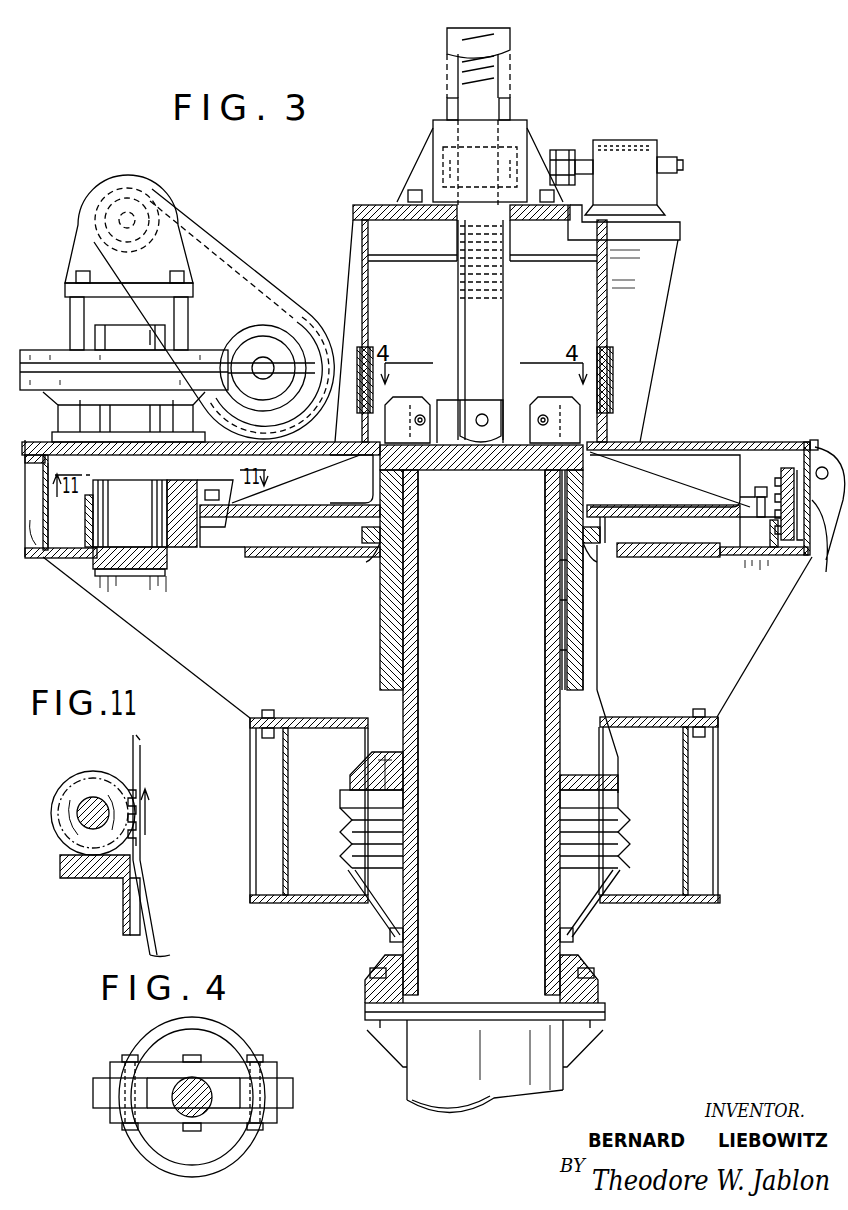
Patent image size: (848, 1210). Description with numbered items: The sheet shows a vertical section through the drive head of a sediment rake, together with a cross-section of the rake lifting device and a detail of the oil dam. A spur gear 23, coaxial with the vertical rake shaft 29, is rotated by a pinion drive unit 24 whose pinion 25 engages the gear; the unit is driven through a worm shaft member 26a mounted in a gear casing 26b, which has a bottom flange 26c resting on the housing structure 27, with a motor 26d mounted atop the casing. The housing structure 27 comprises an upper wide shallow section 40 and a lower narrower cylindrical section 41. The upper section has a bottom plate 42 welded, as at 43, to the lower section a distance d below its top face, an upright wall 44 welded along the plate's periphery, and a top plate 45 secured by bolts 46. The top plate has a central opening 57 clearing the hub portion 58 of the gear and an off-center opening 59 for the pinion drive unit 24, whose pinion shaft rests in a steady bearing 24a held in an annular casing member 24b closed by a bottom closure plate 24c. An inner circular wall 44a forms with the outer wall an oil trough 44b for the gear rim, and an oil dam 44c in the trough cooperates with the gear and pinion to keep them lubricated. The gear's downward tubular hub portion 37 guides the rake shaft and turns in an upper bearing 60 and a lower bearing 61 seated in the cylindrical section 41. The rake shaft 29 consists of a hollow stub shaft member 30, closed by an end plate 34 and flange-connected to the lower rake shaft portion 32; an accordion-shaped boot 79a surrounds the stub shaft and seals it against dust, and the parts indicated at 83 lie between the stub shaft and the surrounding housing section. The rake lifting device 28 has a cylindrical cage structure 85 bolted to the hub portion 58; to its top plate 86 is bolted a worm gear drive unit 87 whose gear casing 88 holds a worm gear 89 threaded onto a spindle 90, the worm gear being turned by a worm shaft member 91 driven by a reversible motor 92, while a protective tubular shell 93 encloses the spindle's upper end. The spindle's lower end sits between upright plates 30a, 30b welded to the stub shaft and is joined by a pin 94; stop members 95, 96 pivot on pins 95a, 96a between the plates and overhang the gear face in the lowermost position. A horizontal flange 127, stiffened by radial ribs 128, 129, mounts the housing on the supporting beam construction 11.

In FIG. 3, the supporting beam construction 11 is at (285, 862).
In FIG. 3, the spur gear 23 is at (786, 480).
In FIG. 11, the spur gear 23 is at (142, 762).
In FIG. 3, the pinion drive unit 24 is at (226, 230).
In FIG. 3, the steady bearing 24a is at (172, 566).
In FIG. 3, the annular casing member 24b is at (88, 578).
In FIG. 3, the bottom closure plate 24c is at (120, 584).
In FIG. 3, the pinion 25 is at (142, 507).
In FIG. 11, the pinion 25 is at (100, 792).
In FIG. 3, the worm shaft member 26a is at (262, 362).
In FIG. 3, the gear casing 26b is at (48, 350).
In FIG. 3, the bottom flange 26c is at (58, 442).
In FIG. 3, the motor 26d is at (80, 220).
In FIG. 3, the housing structure 27 is at (659, 428).
In FIG. 3, the rake lifting device 28 is at (395, 164).
In FIG. 3, the vertical rake shaft 29 is at (626, 955).
In FIG. 3, the hollow stub shaft member 30 is at (418, 897).
In FIG. 4, the hollow stub shaft member 30 is at (222, 1022).
In FIG. 3, the upright plate 30a is at (452, 405).
In FIG. 4, the upright plate 30a is at (225, 1066).
In FIG. 4, the upright plate 30b is at (228, 1118).
In FIG. 3, the lower rake shaft portion 32 is at (425, 1073).
In FIG. 3, the end plate 34 is at (455, 468).
In FIG. 3, the tubular hub portion 37 is at (390, 602).
In FIG. 3, the upper wide shallow section 40 is at (826, 560).
In FIG. 3, the lower cylindrical section 41 is at (598, 628).
In FIG. 3, the bottom plate 42 is at (700, 552).
In FIG. 3, the weld 43 is at (612, 548).
In FIG. 3, the upright wall 44 is at (47, 548).
In FIG. 3, the lower inner circular wall 44a is at (228, 558).
In FIG. 3, the oil trough 44b is at (774, 555).
In FIG. 3, the oil dam 44c is at (83, 540).
In FIG. 11, the oil dam 44c is at (80, 868).
In FIG. 3, the top plate 45 is at (712, 442).
In FIG. 3, the bolts 46 is at (815, 444).
In FIG. 3, the central opening 57 is at (345, 460).
In FIG. 3, the hub portion 58 is at (607, 462).
In FIG. 3, the off-center opening 59 is at (236, 470).
In FIG. 3, the upper bearing 60 is at (345, 565).
In FIG. 3, the lower bearing 61 is at (352, 762).
In FIG. 3, the accordion-shaped boot 79a is at (622, 820).
In FIG. 3, the gap / spacer strips 83 is at (548, 640).
In FIG. 3, the cylindrical cage structure 85 is at (607, 302).
In FIG. 3, the top plate of the cage structure 86 is at (372, 212).
In FIG. 3, the worm gear drive unit 87 is at (636, 102).
In FIG. 3, the gear casing 88 is at (433, 143).
In FIG. 3, the worm gear 89 is at (512, 152).
In FIG. 3, the threaded spindle 90 is at (492, 88).
In FIG. 4, the threaded spindle 90 is at (186, 1082).
In FIG. 3, the worm shaft member 91 is at (520, 158).
In FIG. 3, the reversible motor 92 is at (634, 216).
In FIG. 3, the protective vertical tubular shell 93 is at (447, 102).
In FIG. 4, the pin 94 is at (190, 1132).
In FIG. 3, the stop member 95 is at (422, 412).
In FIG. 4, the stop member 95 is at (102, 1092).
In FIG. 3, the pin 95a is at (418, 416).
In FIG. 3, the stop member 96 is at (540, 414).
In FIG. 4, the stop member 96 is at (285, 1100).
In FIG. 3, the pin 96a is at (566, 402).
In FIG. 3, the horizontal flange 127 is at (324, 722).
In FIG. 3, the reinforcing rib 128 is at (185, 688).
In FIG. 3, the reinforcing rib 129 is at (748, 700).
In FIG. 3, the distance d is at (277, 541).